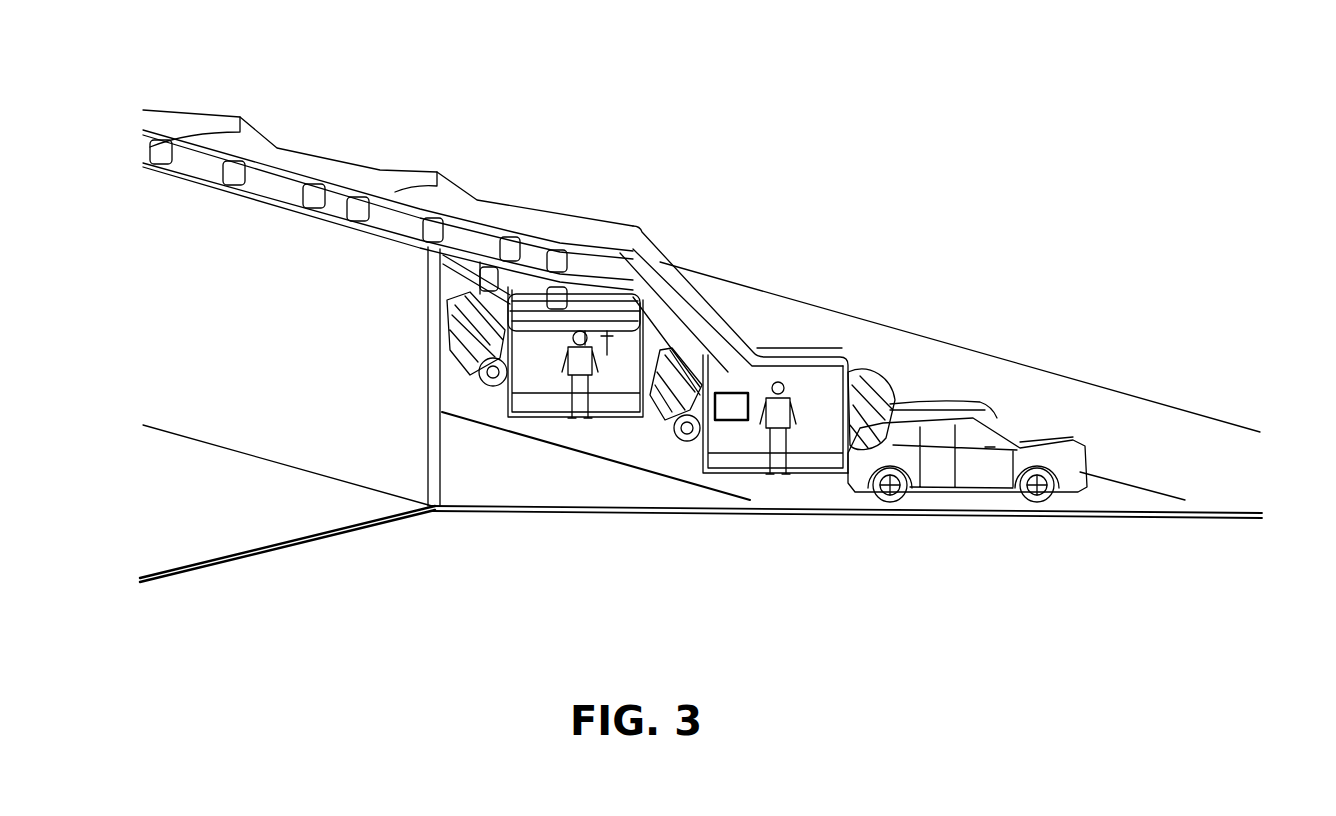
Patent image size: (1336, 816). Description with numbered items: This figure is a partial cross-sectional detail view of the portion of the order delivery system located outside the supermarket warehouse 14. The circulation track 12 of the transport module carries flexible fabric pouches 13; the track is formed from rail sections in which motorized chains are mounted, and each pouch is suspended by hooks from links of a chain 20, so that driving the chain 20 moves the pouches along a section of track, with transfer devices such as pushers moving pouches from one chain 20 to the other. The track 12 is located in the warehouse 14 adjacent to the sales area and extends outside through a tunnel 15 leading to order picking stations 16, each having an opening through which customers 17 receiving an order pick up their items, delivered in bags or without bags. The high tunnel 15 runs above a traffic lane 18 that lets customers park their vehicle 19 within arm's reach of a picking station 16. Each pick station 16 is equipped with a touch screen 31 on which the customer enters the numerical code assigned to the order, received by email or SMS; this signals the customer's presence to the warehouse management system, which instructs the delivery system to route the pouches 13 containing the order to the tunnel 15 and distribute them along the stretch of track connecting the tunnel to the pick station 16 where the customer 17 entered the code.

The circulation track 12 is at (463, 248).
The flexible fabric pouches 13 is at (653, 427).
The warehouse 14 is at (243, 517).
The tunnel 15 is at (288, 168).
The order picking stations 16 is at (797, 347).
The customers 17 is at (784, 468).
The traffic lane 18 is at (492, 478).
The vehicle 19 is at (977, 402).
The chain 20 is at (475, 259).
The touch screen 31 is at (722, 424).